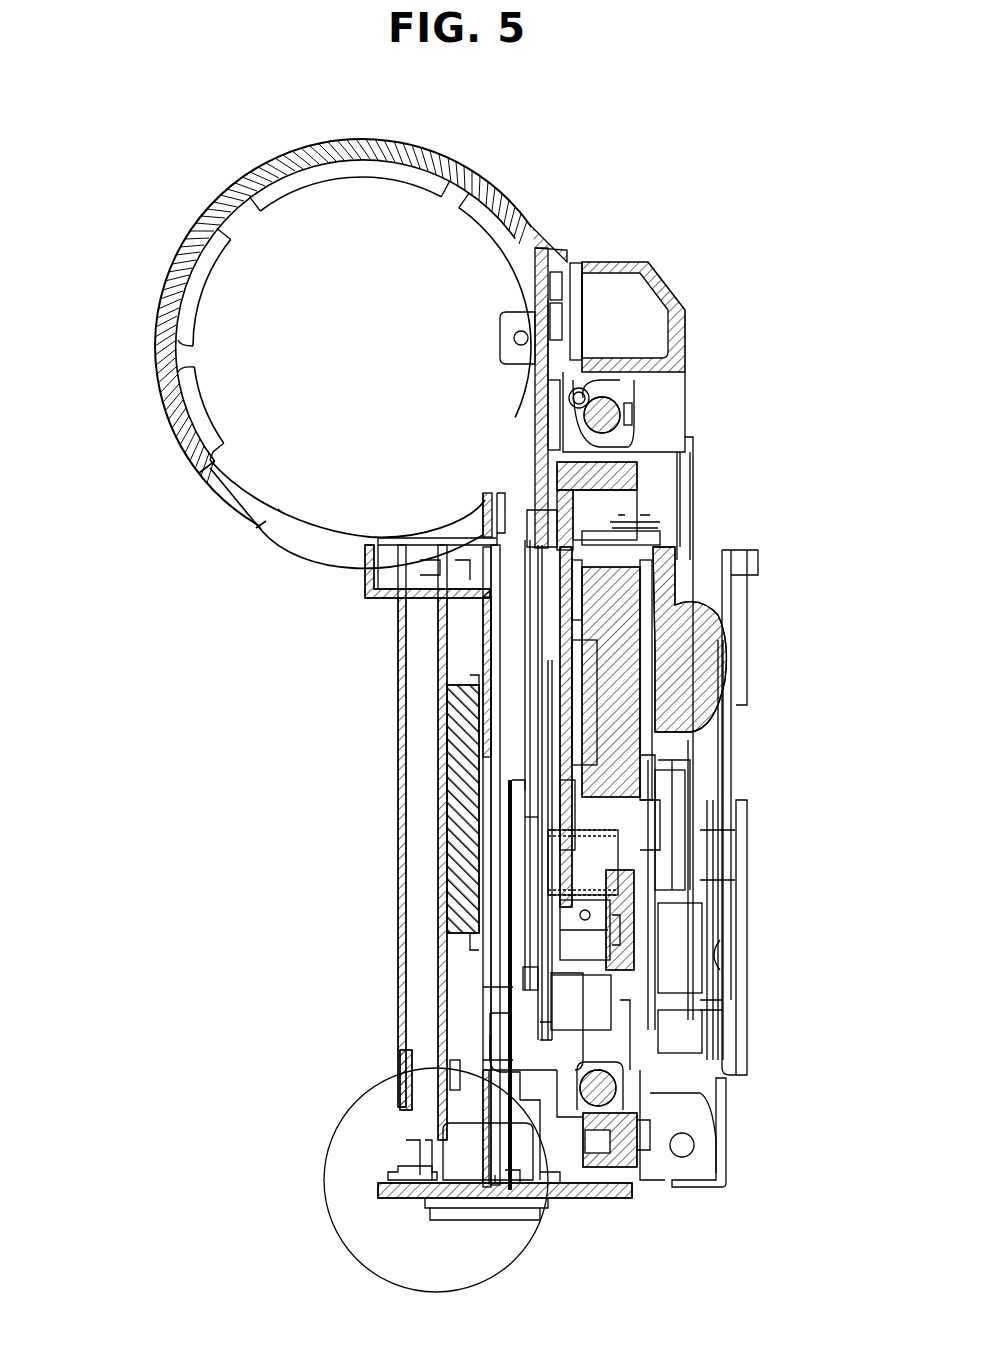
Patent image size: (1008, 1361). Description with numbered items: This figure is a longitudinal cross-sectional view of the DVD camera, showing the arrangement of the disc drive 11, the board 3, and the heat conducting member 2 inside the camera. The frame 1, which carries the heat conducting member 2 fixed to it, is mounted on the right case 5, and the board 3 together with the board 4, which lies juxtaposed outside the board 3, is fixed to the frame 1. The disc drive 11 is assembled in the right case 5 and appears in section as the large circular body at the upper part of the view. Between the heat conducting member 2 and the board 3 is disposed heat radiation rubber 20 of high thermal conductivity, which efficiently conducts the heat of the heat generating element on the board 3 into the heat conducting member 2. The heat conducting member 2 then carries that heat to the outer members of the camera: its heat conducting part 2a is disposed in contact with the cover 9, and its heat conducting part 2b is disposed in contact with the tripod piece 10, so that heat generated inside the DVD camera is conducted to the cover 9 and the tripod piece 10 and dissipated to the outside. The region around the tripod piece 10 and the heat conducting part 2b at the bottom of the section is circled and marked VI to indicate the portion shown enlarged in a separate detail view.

The frame 1 is at (640, 1070).
The heat conducting member 2 is at (476, 988).
The heat conducting part 2a is at (463, 181).
The heat conducting part 2b is at (430, 1176).
The board 3 is at (436, 657).
The board 4 is at (398, 658).
The right case 5 is at (680, 330).
The cover 9 is at (466, 170).
The tripod piece 10 is at (428, 1198).
The disc drive 11 is at (512, 512).
The heat radiation rubber 20 is at (455, 845).
The detail VI is at (548, 1224).